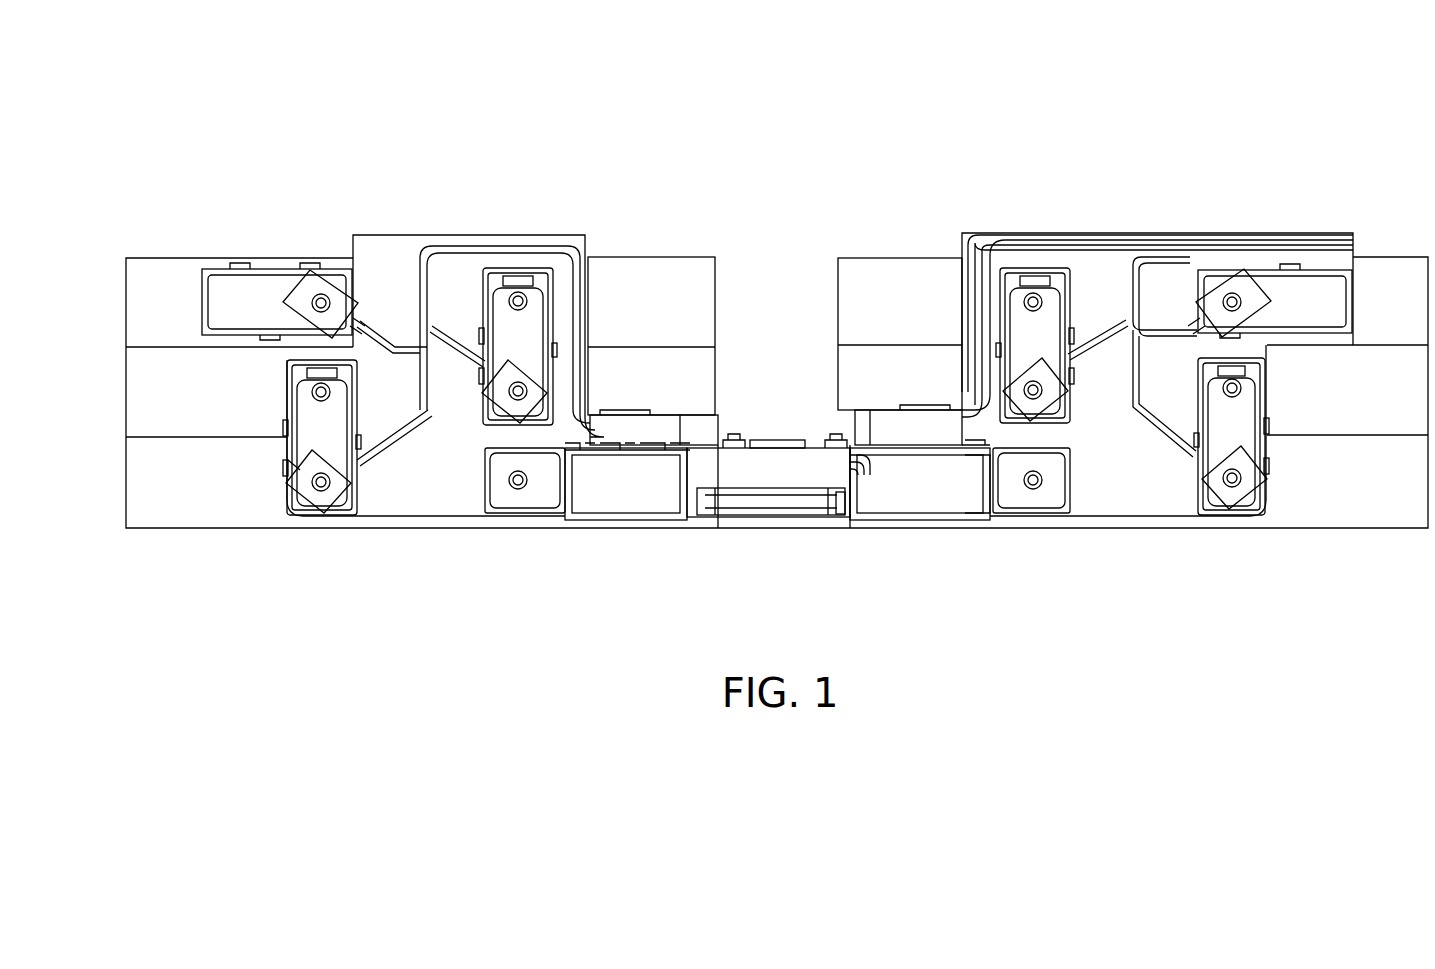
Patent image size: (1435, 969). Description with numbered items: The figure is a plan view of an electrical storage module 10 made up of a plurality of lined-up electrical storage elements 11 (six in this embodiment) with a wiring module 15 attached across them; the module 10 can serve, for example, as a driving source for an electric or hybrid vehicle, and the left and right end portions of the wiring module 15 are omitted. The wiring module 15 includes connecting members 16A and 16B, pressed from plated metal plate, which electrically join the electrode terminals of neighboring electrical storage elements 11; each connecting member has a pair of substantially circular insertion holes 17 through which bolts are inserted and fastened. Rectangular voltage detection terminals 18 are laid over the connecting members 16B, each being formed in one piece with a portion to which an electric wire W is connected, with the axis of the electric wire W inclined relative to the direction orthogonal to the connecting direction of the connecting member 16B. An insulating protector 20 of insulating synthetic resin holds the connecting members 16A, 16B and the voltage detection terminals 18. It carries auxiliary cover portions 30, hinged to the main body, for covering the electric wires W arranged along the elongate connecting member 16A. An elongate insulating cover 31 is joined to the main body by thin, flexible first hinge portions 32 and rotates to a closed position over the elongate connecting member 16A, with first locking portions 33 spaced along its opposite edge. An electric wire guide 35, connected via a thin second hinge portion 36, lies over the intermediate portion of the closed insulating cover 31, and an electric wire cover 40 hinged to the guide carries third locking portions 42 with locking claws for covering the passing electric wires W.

The electrical storage module 10 is at (950, 152).
The electrical storage element 11 is at (143, 402).
The wiring module 15 is at (1342, 507).
The connecting member 16A is at (240, 285).
The connecting member 16B is at (537, 290).
The insertion hole 17 is at (523, 492).
The voltage detection terminal 18 is at (318, 283).
The insulating protector 20 is at (437, 518).
The auxiliary cover portion 30 is at (652, 422).
The insulating cover 31 is at (973, 490).
The first hinge portion 32 is at (625, 518).
The first locking portion 33 is at (652, 443).
The electric wire guide 35 is at (843, 500).
The second hinge portion 36 is at (780, 440).
The electric wire cover 40 is at (793, 478).
The third locking portion 42 is at (730, 445).
The electric wire W is at (885, 470).